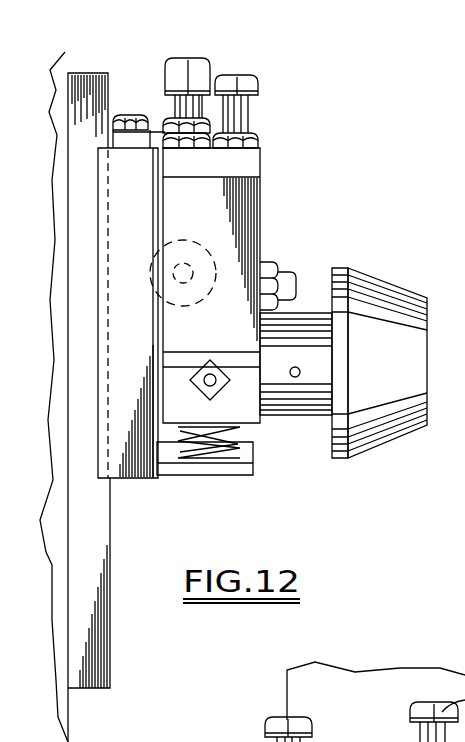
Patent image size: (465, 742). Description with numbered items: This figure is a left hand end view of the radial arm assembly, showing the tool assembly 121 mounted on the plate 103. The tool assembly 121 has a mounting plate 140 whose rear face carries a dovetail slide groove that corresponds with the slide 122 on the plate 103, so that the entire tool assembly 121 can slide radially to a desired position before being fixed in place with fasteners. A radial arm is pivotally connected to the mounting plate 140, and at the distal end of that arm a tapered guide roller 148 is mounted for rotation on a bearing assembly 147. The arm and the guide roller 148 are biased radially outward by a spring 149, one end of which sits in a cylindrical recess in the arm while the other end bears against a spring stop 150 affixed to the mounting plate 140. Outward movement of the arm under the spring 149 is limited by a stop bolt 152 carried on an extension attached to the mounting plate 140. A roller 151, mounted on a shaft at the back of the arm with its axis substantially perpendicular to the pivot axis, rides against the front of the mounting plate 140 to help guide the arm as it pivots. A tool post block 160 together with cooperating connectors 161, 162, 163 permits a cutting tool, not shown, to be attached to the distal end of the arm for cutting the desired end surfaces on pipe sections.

The plate 103 is at (62, 712).
The tool assembly 121 is at (267, 206).
The slide 122 is at (102, 645).
The mounting plate 140 is at (128, 163).
The bearing assembly 147 is at (289, 412).
The tapered guide roller 148 is at (373, 287).
The spring 149 is at (228, 447).
The spring stop 150 is at (237, 472).
The roller 151 is at (192, 268).
The stop bolt 152 is at (190, 66).
The tool post block 160 is at (250, 165).
The connector 161 is at (245, 741).
The connector 162 is at (332, 741).
The connector 163 is at (262, 82).